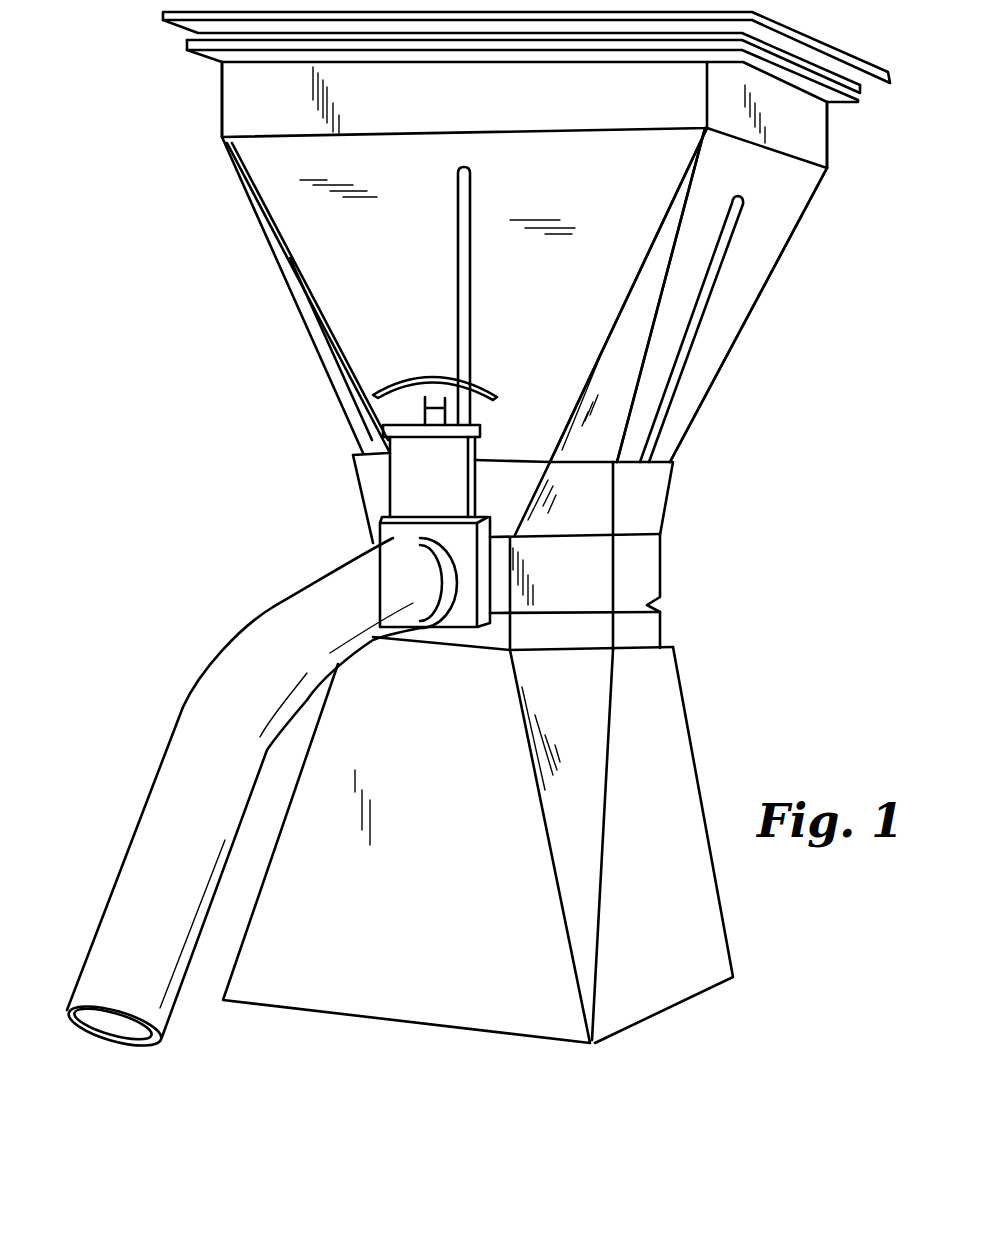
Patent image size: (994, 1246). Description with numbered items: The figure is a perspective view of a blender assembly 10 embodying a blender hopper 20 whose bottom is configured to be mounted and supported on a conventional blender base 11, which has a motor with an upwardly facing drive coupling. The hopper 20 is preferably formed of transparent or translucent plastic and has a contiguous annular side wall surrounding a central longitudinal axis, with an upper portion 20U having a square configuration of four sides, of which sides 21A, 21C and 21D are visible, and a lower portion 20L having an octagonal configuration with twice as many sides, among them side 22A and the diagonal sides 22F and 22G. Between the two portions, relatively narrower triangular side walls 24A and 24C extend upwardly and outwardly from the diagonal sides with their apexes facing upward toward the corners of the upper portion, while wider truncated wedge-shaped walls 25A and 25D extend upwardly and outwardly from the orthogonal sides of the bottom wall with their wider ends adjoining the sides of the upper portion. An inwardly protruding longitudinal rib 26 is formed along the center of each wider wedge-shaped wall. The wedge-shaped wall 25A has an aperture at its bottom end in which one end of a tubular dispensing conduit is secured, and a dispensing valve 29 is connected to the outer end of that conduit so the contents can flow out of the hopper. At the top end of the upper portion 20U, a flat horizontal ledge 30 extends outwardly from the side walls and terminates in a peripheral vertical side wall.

The blender assembly 10 is at (252, 351).
The blender base 11 is at (687, 730).
The blender hopper 20 is at (738, 345).
The upper portion 20U is at (222, 108).
The lower portion 20L is at (347, 413).
The side of upper portion 21A is at (257, 113).
The side of upper portion 21C is at (222, 78).
The side of upper portion 21D is at (807, 125).
The side of lower portion 22A is at (297, 240).
The diagonal side of lower portion 22F is at (618, 413).
The diagonal side of lower portion 22G is at (340, 382).
The triangular side wall 24A is at (625, 358).
The triangular side wall 24C is at (327, 347).
The truncated wedge-shaped wall 25A is at (339, 255).
The truncated wedge-shaped wall 25D is at (782, 220).
The longitudinal rib 26 is at (470, 260).
The dispensing valve 29 is at (442, 494).
The horizontal ledge 30 is at (652, 545).